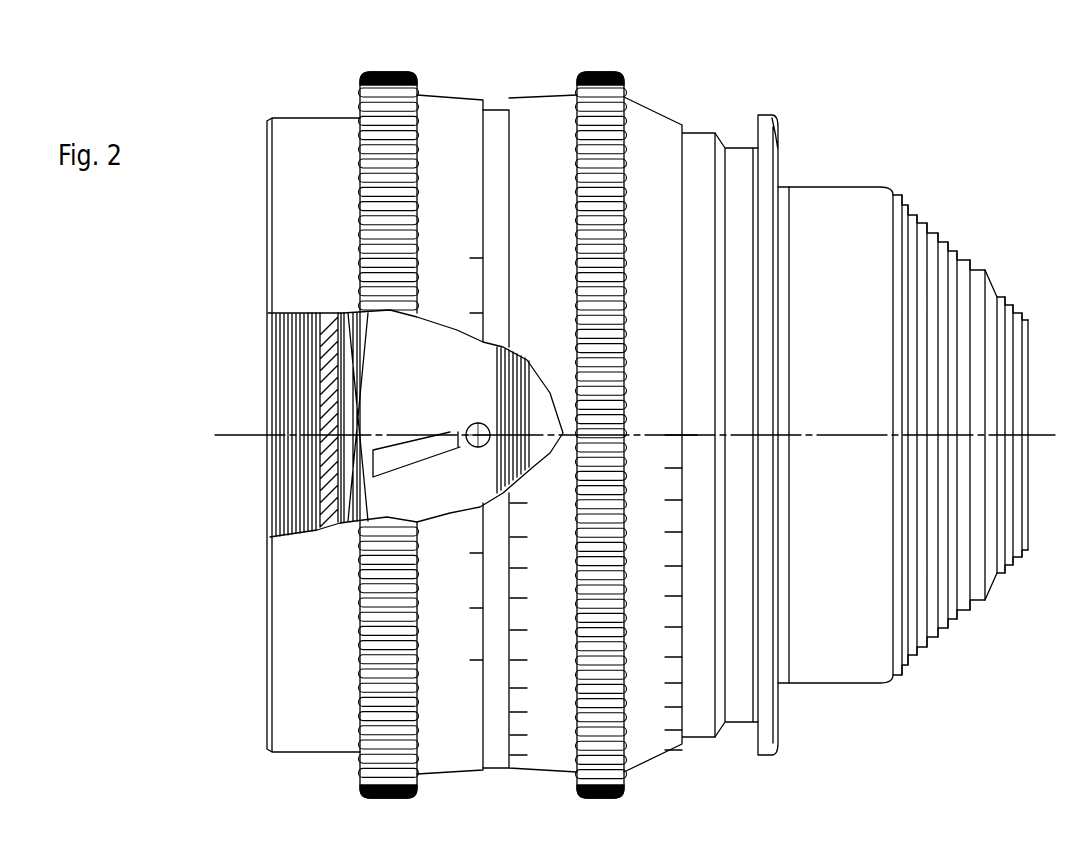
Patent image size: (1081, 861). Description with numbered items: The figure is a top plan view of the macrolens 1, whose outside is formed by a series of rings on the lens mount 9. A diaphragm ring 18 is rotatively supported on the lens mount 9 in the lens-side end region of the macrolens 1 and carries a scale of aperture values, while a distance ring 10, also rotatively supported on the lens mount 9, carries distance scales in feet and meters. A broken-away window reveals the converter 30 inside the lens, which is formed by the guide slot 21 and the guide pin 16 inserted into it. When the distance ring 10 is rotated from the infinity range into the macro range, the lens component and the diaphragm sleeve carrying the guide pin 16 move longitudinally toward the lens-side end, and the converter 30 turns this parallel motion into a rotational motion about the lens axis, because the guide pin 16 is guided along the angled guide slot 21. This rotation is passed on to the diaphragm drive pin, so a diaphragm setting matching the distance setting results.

The macrolens 1 is at (789, 106).
The lens mount 9 is at (862, 187).
The distance ring 10 is at (640, 97).
The guide pin 16 is at (477, 422).
The diaphragm ring 18 is at (452, 107).
The guide slot 21 is at (417, 456).
The converter 30 is at (419, 417).